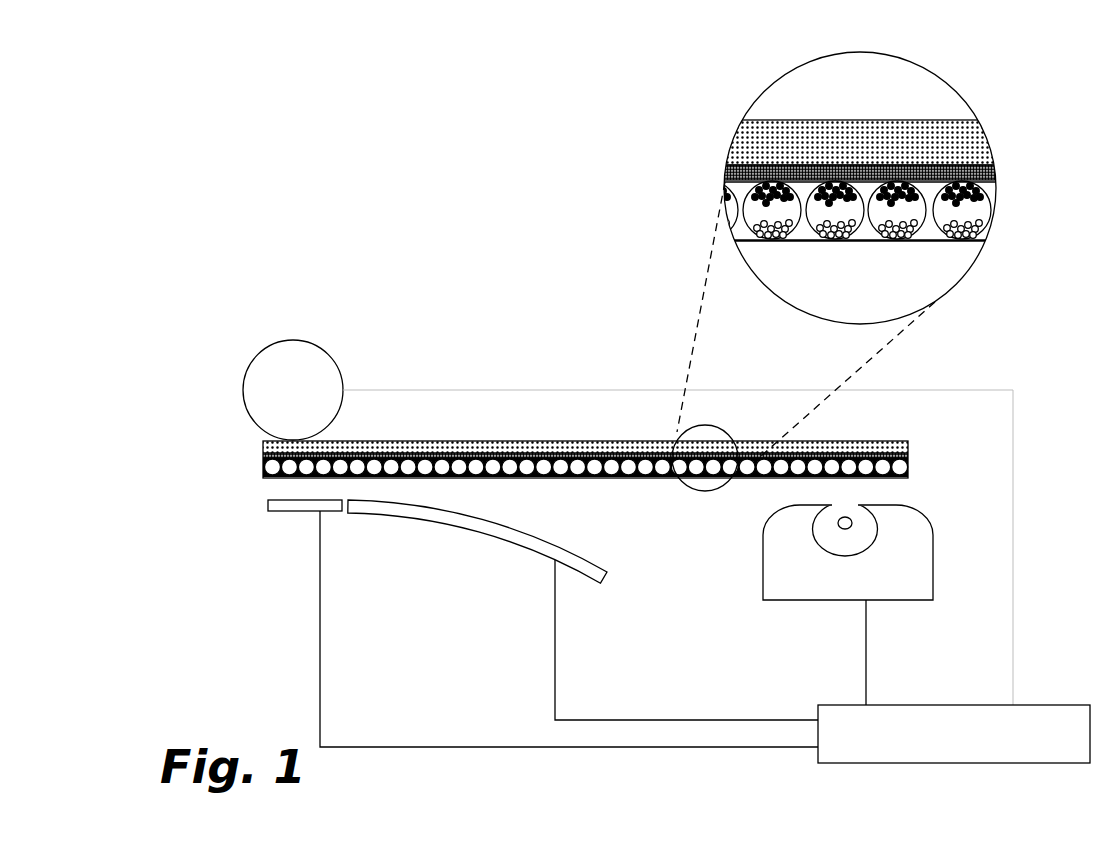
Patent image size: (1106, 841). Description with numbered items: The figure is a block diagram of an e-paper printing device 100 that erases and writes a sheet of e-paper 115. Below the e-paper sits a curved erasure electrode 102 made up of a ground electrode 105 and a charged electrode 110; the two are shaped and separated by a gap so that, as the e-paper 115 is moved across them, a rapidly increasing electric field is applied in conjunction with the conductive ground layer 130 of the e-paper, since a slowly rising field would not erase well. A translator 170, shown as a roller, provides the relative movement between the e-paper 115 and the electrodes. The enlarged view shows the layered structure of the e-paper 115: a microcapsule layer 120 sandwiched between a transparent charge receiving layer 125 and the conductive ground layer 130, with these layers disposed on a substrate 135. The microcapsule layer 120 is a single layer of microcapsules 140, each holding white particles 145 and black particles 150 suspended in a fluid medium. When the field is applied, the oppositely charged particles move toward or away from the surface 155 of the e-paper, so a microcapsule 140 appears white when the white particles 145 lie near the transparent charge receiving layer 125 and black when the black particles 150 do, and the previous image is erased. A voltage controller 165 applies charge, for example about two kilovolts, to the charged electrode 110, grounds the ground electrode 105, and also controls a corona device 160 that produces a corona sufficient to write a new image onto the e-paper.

The e-paper printing device 100 is at (283, 118).
The curved erasure electrode 102 is at (386, 566).
The ground electrode 105 is at (293, 523).
The charged electrode 110 is at (476, 540).
The e-paper 115 is at (256, 437).
The microcapsule layer 120 is at (862, 172).
The transparent charge receiving layer 125 is at (975, 242).
The conductive ground layer 130 is at (996, 170).
The substrate 135 is at (972, 137).
The microcapsule 140 is at (882, 182).
The white particles 145 is at (986, 226).
The black particles 150 is at (987, 191).
The surface 155 is at (833, 262).
The corona device 160 is at (783, 612).
The voltage controller 165 is at (954, 734).
The translator 170 is at (283, 365).